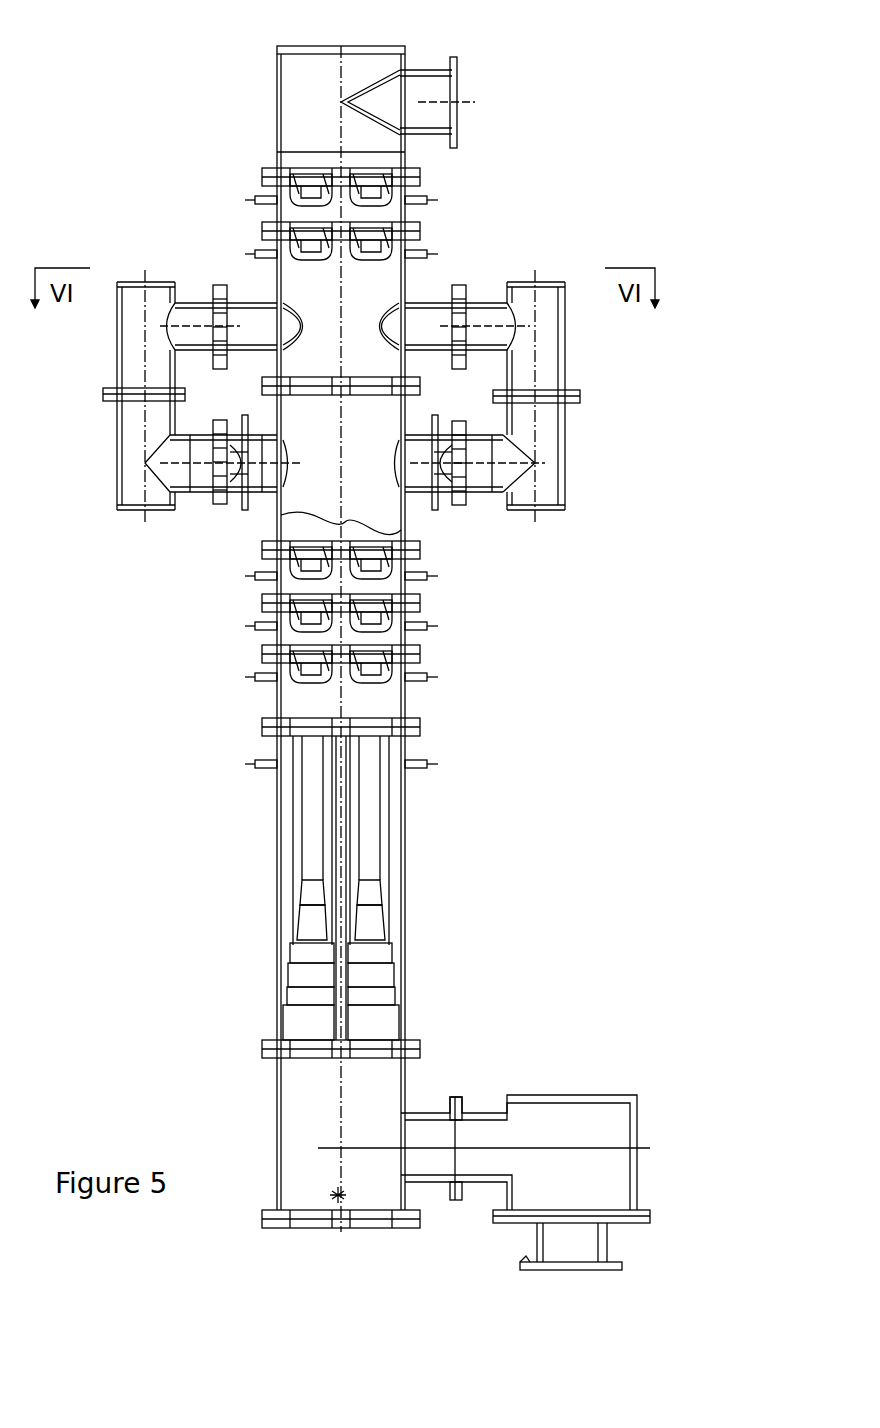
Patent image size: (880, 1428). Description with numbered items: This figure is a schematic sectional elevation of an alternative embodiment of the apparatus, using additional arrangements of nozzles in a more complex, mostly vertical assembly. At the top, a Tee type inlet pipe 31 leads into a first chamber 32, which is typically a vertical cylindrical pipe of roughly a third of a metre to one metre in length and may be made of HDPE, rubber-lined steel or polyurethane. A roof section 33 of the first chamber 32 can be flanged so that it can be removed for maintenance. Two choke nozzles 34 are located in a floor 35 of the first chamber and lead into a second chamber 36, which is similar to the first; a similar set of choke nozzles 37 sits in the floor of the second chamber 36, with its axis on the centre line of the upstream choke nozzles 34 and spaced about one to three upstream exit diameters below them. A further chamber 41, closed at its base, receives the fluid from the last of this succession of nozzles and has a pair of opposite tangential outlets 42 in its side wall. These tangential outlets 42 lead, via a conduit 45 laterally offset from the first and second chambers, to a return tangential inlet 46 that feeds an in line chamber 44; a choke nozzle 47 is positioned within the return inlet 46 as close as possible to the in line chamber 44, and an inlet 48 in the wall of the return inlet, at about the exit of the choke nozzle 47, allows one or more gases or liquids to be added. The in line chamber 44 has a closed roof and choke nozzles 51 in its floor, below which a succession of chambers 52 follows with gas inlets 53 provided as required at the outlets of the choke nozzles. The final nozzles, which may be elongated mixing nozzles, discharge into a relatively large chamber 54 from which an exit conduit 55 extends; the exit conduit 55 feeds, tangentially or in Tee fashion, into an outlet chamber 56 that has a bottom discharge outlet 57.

The inlet pipe 31 is at (418, 92).
The first chamber 32 is at (315, 97).
The roof section 33 is at (360, 47).
The choke nozzles 34 is at (395, 188).
The floor 35 is at (300, 185).
The second chamber 36 is at (302, 213).
The choke nozzles 37 is at (405, 247).
The further chamber 41 is at (305, 275).
The tangential outlets 42 is at (415, 322).
The in line chamber 44 is at (298, 488).
The conduit 45 is at (540, 372).
The return tangential inlet 46 is at (440, 500).
The choke nozzle 47 is at (506, 446).
The inlet 48 is at (433, 430).
The choke nozzles 51 is at (405, 607).
The succession of chambers 52 is at (300, 578).
The gas inlets 53 is at (405, 575).
The chamber 54 is at (330, 1125).
The exit conduit 55 is at (465, 1140).
The outlet chamber 56 is at (565, 1180).
The bottom discharge outlet 57 is at (570, 1240).